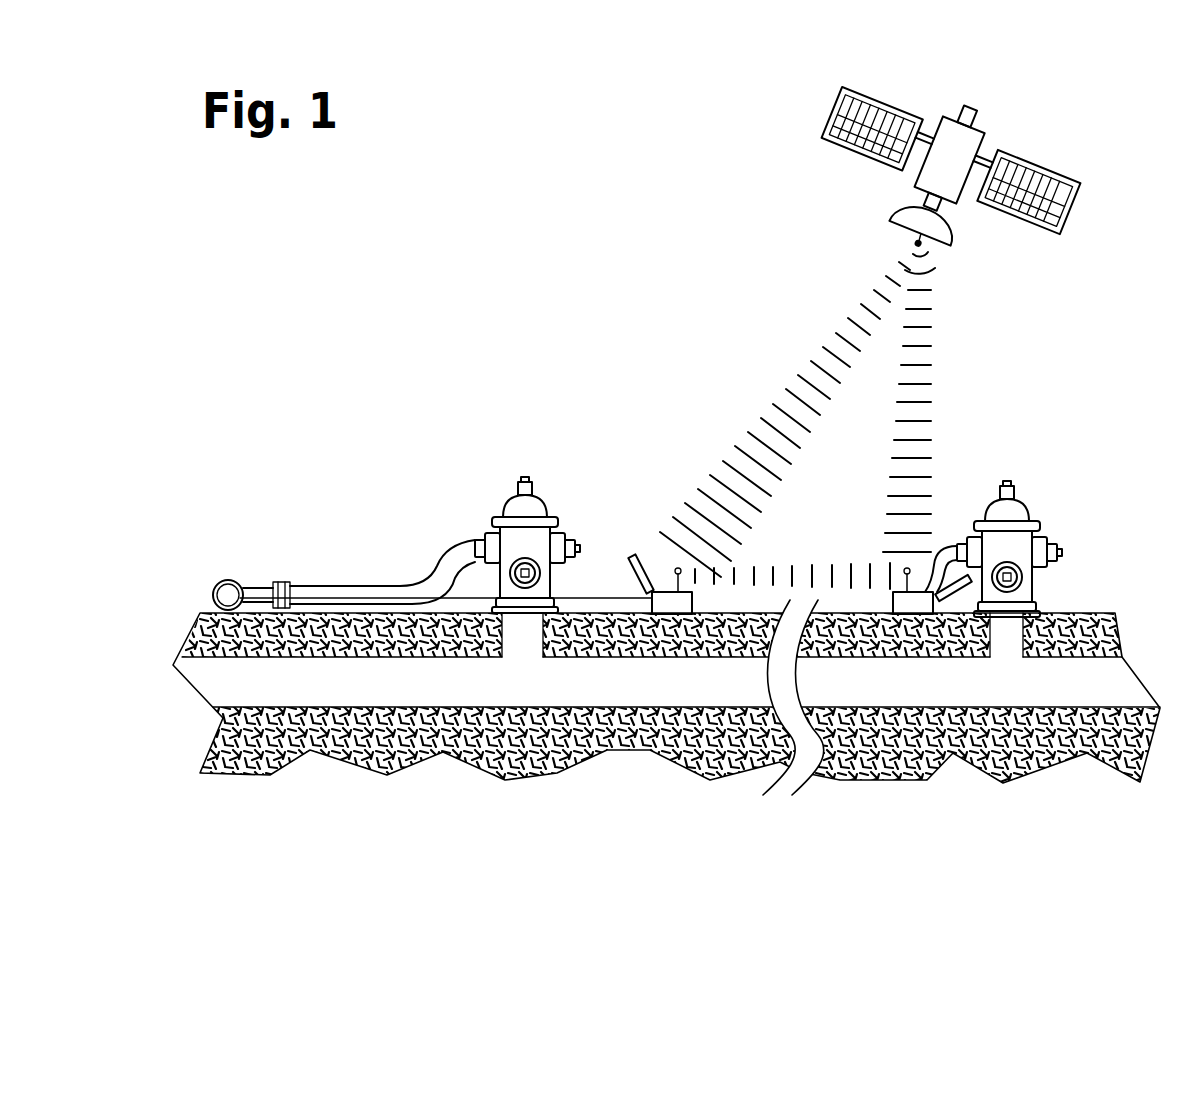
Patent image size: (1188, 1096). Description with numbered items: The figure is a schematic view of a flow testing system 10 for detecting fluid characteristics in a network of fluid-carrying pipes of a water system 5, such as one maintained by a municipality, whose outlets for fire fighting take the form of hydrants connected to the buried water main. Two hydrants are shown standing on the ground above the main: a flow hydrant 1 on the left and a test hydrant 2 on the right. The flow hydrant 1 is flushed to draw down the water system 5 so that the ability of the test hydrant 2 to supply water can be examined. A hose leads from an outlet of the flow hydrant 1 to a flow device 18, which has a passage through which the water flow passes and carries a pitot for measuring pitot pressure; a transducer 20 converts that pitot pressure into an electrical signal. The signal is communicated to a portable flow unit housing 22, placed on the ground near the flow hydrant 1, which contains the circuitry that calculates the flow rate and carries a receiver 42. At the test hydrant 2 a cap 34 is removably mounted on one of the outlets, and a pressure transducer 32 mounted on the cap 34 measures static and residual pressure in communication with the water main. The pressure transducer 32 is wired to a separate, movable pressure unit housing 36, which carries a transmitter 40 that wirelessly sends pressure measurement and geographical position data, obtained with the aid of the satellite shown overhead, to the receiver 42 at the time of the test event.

The flow testing system 10 is at (515, 270).
The flow hydrant 1 is at (495, 517).
The test hydrant 2 is at (1018, 505).
The water system 5 is at (1130, 687).
The flow device 18 is at (232, 580).
The transducer 20 is at (256, 597).
The flow unit housing 22 is at (662, 535).
The receiver 42 is at (678, 568).
The pressure unit housing 36 is at (882, 549).
The transmitter 40 is at (897, 593).
The pressure transducer 32 is at (958, 550).
The cap 34 is at (970, 538).